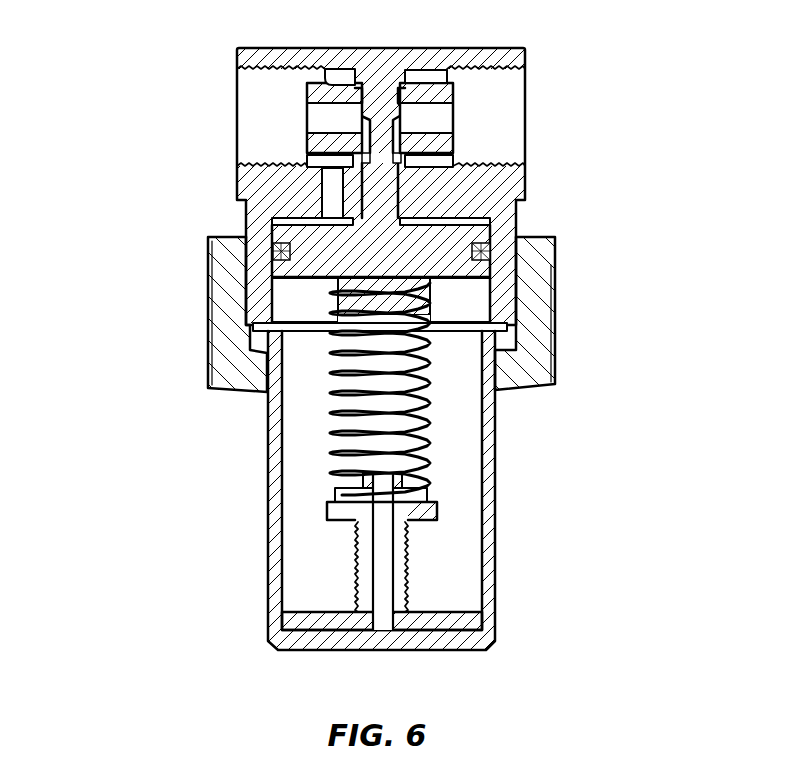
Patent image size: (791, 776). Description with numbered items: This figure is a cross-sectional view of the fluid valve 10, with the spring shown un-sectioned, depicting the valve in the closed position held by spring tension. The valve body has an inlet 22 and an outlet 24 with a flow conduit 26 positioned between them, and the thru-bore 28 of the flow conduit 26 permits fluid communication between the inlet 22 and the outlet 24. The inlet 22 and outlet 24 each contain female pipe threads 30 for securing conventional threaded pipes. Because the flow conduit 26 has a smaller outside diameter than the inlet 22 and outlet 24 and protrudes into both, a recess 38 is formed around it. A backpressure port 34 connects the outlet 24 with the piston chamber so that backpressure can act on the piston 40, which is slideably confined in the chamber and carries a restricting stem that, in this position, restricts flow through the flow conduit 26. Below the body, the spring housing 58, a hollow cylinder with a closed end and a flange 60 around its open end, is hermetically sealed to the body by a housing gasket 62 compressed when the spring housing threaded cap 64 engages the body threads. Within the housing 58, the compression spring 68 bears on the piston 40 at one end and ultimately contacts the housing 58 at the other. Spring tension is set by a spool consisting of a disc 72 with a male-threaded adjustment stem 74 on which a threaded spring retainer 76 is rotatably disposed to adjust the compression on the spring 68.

The fluid valve 10 is at (236, 537).
The inlet 22 is at (523, 145).
The outlet 24 is at (237, 78).
The flow conduit 26 is at (455, 48).
The thru-bore 28 is at (325, 133).
The female pipe threads 30 is at (292, 68).
The backpressure port 34 is at (300, 222).
The recess 38 is at (333, 67).
The piston 40 is at (415, 292).
The spring housing 58 is at (495, 507).
The flange 60 is at (265, 352).
The housing gasket 62 is at (255, 327).
The spring housing threaded cap 64 is at (555, 307).
The compression spring 68 is at (328, 452).
The disc 72 is at (460, 605).
The adjustment stem 74 is at (357, 573).
The threaded spring retainer 76 is at (418, 521).